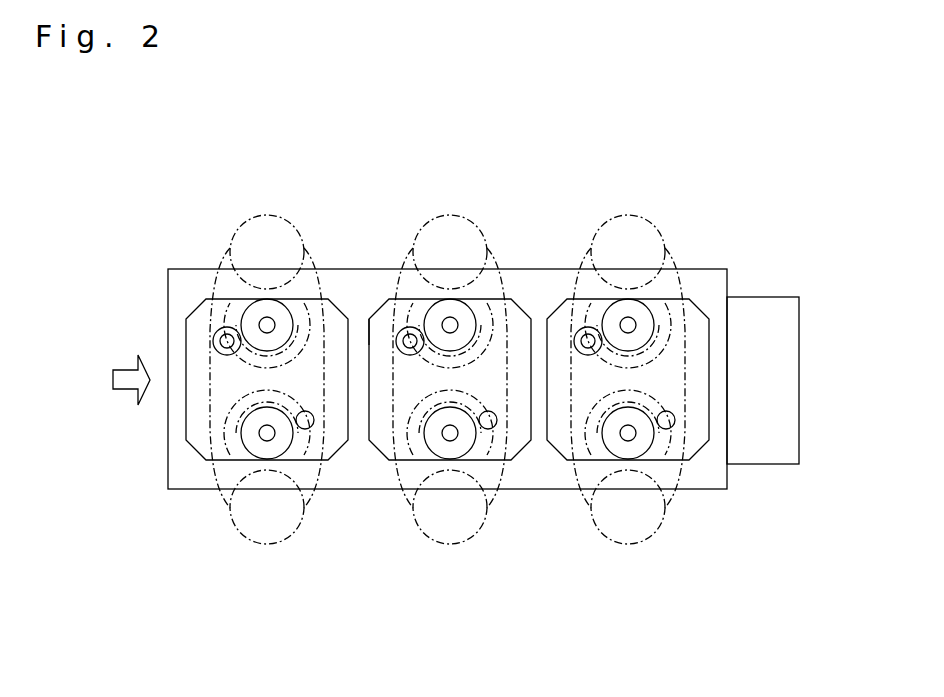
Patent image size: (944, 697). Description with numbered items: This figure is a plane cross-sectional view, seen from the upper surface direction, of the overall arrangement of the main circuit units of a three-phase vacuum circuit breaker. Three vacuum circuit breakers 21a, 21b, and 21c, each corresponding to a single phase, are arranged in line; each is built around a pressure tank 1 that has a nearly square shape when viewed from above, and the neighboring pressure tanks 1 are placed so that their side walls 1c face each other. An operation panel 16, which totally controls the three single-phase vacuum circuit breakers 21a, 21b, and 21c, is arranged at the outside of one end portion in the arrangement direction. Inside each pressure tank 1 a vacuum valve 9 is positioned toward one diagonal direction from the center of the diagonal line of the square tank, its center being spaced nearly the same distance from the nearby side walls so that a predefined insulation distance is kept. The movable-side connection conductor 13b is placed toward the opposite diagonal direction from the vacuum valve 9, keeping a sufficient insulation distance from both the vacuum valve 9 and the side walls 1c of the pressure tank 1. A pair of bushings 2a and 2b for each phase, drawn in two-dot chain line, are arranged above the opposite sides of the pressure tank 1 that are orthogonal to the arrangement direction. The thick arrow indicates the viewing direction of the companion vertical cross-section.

The pressure tank 1 is at (328, 298).
The side wall 1c is at (369, 337).
The bushing 2a is at (243, 238).
The bushing 2b is at (245, 510).
The vacuum valve 9 is at (214, 335).
The movable-side connection conductor 13b is at (313, 427).
The operation panel 16 is at (765, 297).
The vacuum circuit breaker 21a is at (197, 572).
The vacuum circuit breaker 21b is at (380, 572).
The vacuum circuit breaker 21c is at (560, 572).